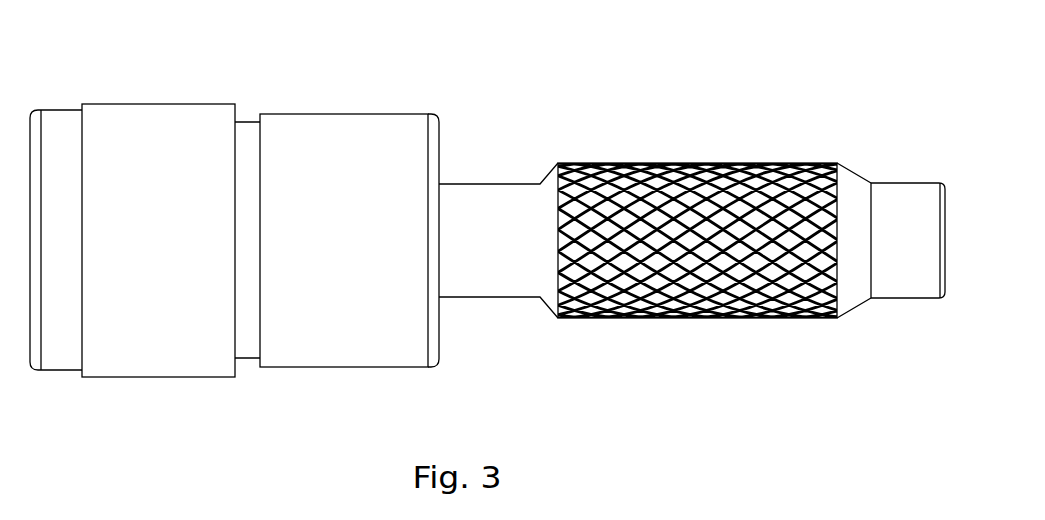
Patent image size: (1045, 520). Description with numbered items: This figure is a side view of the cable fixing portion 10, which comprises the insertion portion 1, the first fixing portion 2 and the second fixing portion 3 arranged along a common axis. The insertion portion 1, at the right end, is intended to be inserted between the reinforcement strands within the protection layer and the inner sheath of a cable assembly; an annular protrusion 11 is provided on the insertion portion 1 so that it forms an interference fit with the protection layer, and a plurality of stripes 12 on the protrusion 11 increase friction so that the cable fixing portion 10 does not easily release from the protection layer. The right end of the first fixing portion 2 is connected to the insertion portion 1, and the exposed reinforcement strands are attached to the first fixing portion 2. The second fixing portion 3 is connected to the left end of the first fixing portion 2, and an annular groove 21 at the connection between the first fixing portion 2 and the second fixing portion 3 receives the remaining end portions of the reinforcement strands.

The insertion portion 1 is at (908, 202).
The first fixing portion 2 is at (338, 140).
The second fixing portion 3 is at (133, 150).
The annular groove 21 is at (247, 138).
The cable fixing portion 10 is at (503, 165).
The annular protrusion 11 is at (812, 205).
The stripes 12 is at (762, 206).